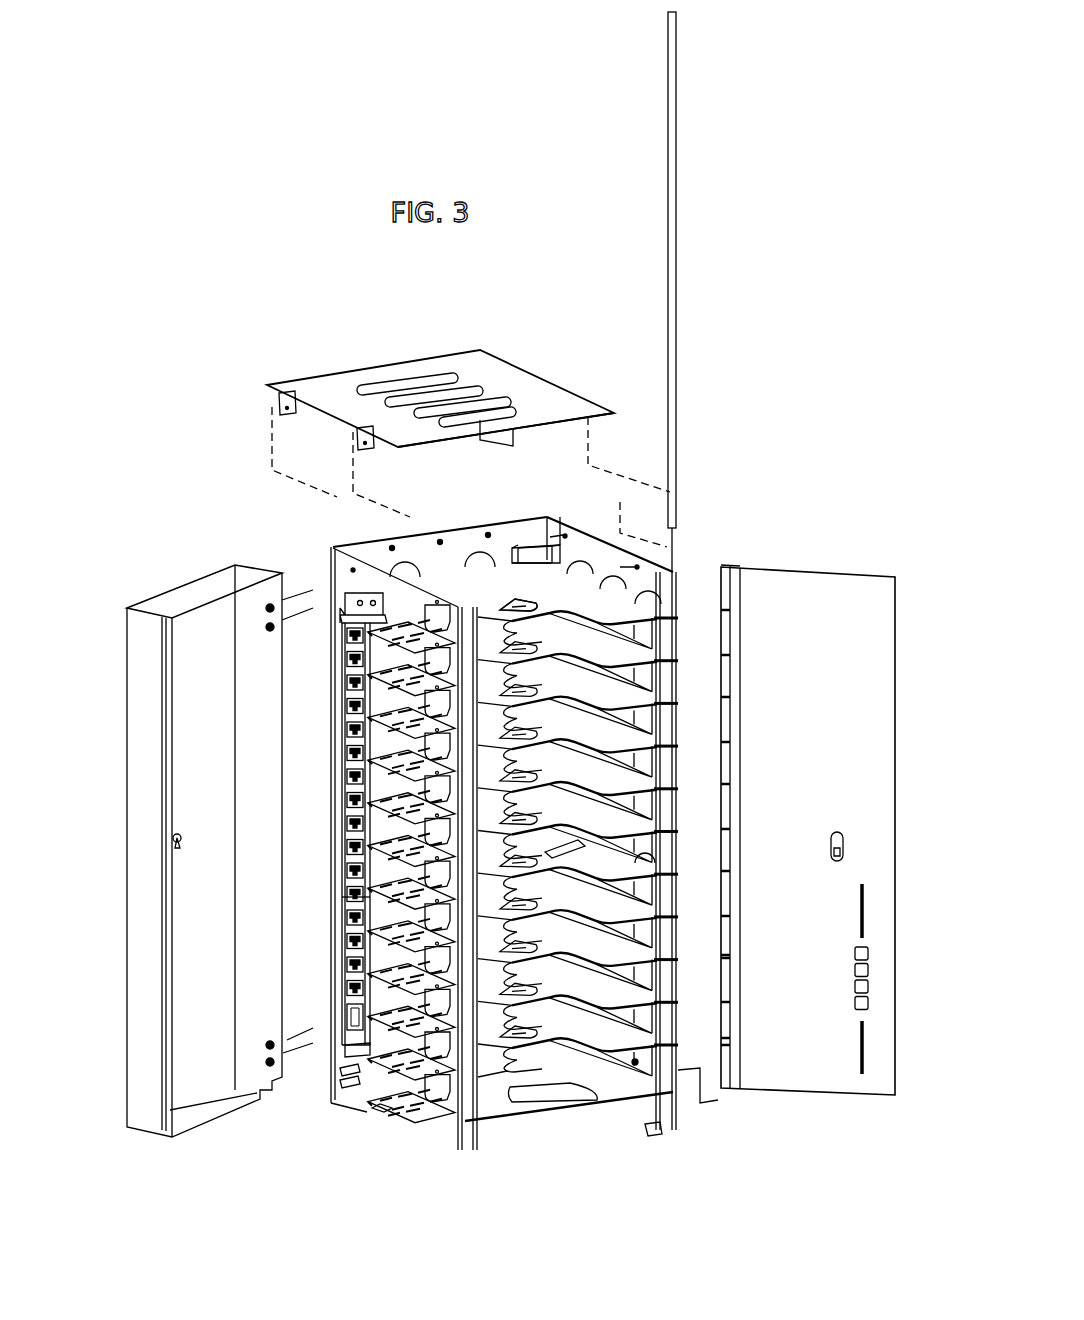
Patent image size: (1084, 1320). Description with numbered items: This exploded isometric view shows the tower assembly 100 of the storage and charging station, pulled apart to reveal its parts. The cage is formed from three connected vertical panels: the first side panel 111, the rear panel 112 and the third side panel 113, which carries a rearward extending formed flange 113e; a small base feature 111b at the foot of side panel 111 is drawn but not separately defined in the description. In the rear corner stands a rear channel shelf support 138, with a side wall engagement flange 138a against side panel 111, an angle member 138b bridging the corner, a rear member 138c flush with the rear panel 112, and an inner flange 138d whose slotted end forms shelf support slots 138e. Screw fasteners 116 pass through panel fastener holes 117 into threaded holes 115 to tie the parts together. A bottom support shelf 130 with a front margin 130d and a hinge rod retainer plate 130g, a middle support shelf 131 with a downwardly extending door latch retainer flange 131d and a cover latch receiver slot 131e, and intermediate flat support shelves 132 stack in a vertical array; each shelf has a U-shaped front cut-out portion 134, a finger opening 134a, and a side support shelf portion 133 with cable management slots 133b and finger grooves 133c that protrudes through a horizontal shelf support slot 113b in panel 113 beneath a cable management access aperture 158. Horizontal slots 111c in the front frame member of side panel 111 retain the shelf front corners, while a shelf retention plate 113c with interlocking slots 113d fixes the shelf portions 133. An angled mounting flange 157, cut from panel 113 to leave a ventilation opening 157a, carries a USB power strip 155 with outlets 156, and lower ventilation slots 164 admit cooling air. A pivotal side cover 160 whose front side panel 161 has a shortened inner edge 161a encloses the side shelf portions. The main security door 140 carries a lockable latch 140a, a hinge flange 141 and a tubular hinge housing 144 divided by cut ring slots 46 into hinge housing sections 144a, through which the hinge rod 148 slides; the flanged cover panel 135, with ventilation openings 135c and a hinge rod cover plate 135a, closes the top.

The tower assembly 100 is at (255, 279).
The hinge rod 148 is at (678, 240).
The flanged cover panel 135 is at (470, 352).
The cover plate ventilation openings 135c is at (480, 391).
The hinge rod cover plate 135a is at (614, 413).
The second vertically extending rear panel 112 is at (435, 533).
The first vertically extending side panel 111 is at (570, 527).
The side wall foot 111b is at (652, 1136).
The horizontal slots 111c is at (640, 960).
The rear channel shelf support 138 is at (517, 553).
The side wall engagement flange 138a is at (557, 550).
The angle member 138b is at (553, 562).
The rear member 138c is at (528, 553).
The inner flange 138d is at (547, 557).
The finger groove interlocking shelf support slots 138e is at (520, 557).
The third vertically extending side panel 113 is at (330, 1092).
The horizontal shelf support slots 113b is at (347, 664).
The shelf retention plate 113c is at (453, 1128).
The finger groove shelf interlocking slots 113d is at (428, 1125).
The rearward extending formed flange 113e is at (585, 612).
The screw fasteners 116 is at (347, 726).
The power outlets 156 is at (347, 858).
The cover latch receiver slot 131e is at (347, 898).
The USB power strip 155 is at (347, 1000).
The angled mounting flange 157 is at (365, 592).
The vertical ventilation opening 157a is at (375, 592).
The panel fastener holes 117 is at (353, 568).
The lower horizontal ventilation slots 164 is at (350, 1082).
The side support shelf portions 133 is at (368, 803).
The cable management slots 133b is at (368, 762).
The shelf side support finger grooves 133c is at (368, 835).
The intermediate flat support shelves 132 is at (615, 622).
The U-shaped front cut-out portion 134 is at (550, 918).
The finger opening 134a is at (530, 777).
The middle support shelf 131 is at (578, 836).
The door latch retainer flange 131d is at (585, 848).
The cable management access aperture 158 is at (492, 1022).
The bottom support shelf 130 is at (518, 1064).
The front margin 130d is at (560, 1102).
The hinge rod retainer plate 130g is at (673, 1092).
The threaded holes 115 is at (633, 1064).
The side cover 160 is at (127, 712).
The front side panel 161 is at (147, 865).
The shortened formed inner edge 161a is at (165, 910).
The main security door 140 is at (895, 665).
The lockable steel latch 140a is at (843, 847).
The hinge flange 141 is at (738, 697).
The tubular hinge housing 144 is at (727, 567).
The hinge housing sections 144a is at (726, 812).
The hinge segments 46 is at (728, 1038).